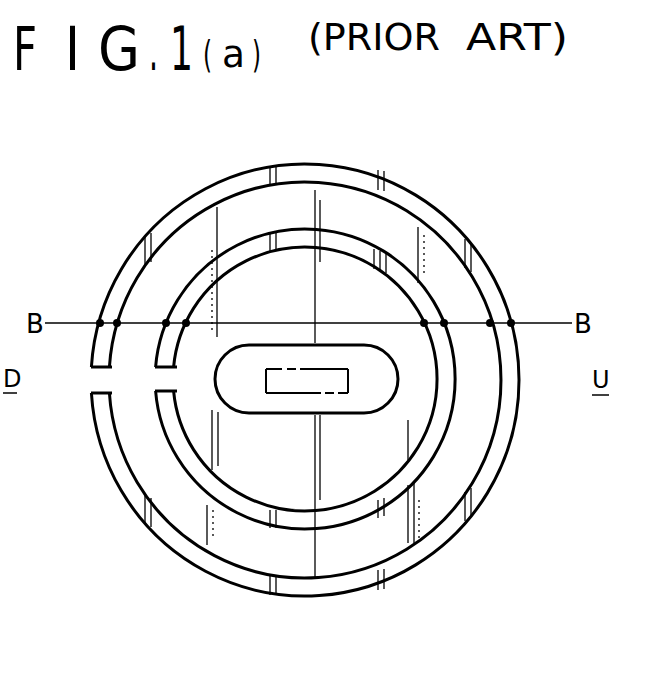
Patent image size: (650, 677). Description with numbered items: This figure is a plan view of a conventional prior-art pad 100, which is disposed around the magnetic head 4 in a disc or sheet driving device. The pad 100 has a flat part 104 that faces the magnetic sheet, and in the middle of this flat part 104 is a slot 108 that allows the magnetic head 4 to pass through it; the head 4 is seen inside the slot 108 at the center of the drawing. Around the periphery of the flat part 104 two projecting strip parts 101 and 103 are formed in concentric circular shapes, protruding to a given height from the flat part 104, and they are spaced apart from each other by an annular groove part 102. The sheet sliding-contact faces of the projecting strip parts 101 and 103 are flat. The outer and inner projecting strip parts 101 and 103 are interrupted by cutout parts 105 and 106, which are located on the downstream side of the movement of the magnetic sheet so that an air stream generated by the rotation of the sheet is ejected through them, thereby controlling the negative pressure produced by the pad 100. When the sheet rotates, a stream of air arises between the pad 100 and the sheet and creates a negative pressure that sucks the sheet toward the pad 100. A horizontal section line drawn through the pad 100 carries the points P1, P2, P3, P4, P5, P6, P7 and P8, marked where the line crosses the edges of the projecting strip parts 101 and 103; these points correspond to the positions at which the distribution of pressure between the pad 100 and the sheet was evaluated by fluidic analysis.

The pad 100 is at (408, 161).
The projecting strip part 101 is at (364, 182).
The annular groove part 102 is at (295, 210).
The projecting strip part 103 is at (247, 250).
The flat part 104 is at (248, 443).
The cutout part 105 is at (99, 379).
The cutout part 106 is at (161, 378).
The slot 108 is at (364, 396).
The magnetic head 4 is at (302, 384).
The point P1 is at (100, 322).
The point P2 is at (117, 322).
The point P3 is at (166, 322).
The point P4 is at (186, 322).
The point P5 is at (424, 322).
The point P6 is at (444, 322).
The point P7 is at (490, 322).
The point P8 is at (511, 322).